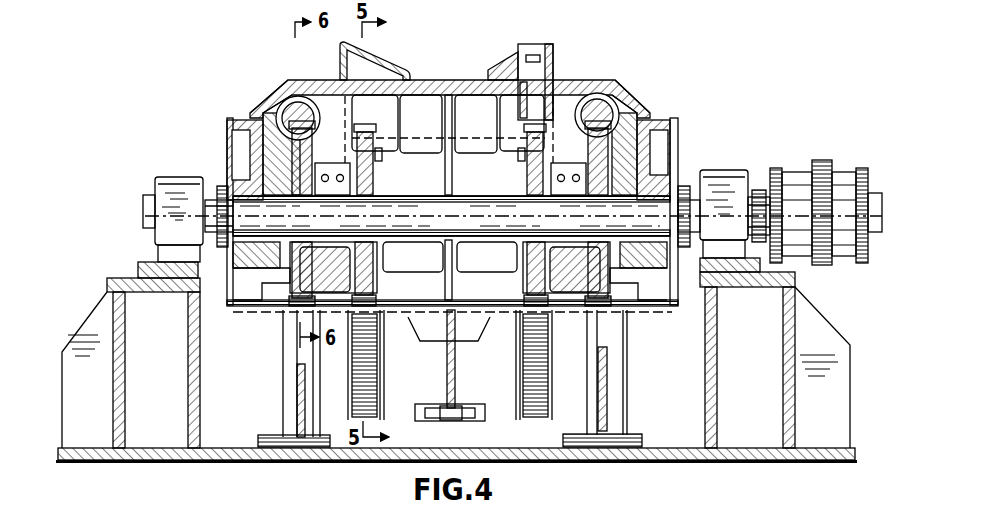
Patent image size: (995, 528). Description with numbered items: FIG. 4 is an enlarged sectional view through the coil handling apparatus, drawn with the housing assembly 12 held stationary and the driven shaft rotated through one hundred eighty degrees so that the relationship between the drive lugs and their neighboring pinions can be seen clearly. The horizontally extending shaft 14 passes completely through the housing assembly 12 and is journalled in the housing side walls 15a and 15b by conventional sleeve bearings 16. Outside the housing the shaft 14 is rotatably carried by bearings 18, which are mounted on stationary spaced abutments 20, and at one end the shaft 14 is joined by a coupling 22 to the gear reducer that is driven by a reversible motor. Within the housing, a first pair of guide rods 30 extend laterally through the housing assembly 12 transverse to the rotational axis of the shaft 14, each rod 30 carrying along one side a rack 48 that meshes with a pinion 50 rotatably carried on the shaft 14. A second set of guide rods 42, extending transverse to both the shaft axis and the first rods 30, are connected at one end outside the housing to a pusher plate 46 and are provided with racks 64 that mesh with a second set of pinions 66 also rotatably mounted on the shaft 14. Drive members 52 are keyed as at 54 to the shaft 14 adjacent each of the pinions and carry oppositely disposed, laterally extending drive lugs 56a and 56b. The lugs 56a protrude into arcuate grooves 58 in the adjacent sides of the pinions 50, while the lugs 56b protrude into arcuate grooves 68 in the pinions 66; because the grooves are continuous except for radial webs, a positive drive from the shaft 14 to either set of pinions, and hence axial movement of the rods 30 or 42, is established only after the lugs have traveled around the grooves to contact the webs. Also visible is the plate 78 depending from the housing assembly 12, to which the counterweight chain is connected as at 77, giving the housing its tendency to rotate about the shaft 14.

The housing assembly 12 is at (428, 86).
The shaft 14 is at (456, 210).
The housing side wall 15a is at (653, 143).
The housing side wall 15b is at (250, 142).
The sleeve bearings 16 is at (240, 190).
The bearings 18 is at (160, 188).
The abutments 20 is at (80, 337).
The coupling 22 is at (782, 180).
The guide rods 30 is at (294, 97).
The guide rods 42 is at (379, 378).
The pusher plate 46 is at (378, 62).
The racks 48 is at (289, 103).
The pinions 50 is at (282, 150).
The drive members 52 is at (328, 176).
The key 54 is at (338, 233).
The drive lugs 56a is at (308, 292).
The drive lugs 56b is at (372, 292).
The arcuate grooves 58 is at (287, 298).
The racks 64 is at (358, 366).
The pinions 66 is at (375, 173).
The arcuate grooves 68 is at (370, 272).
The connection 77 is at (450, 421).
The plate 78 is at (456, 378).